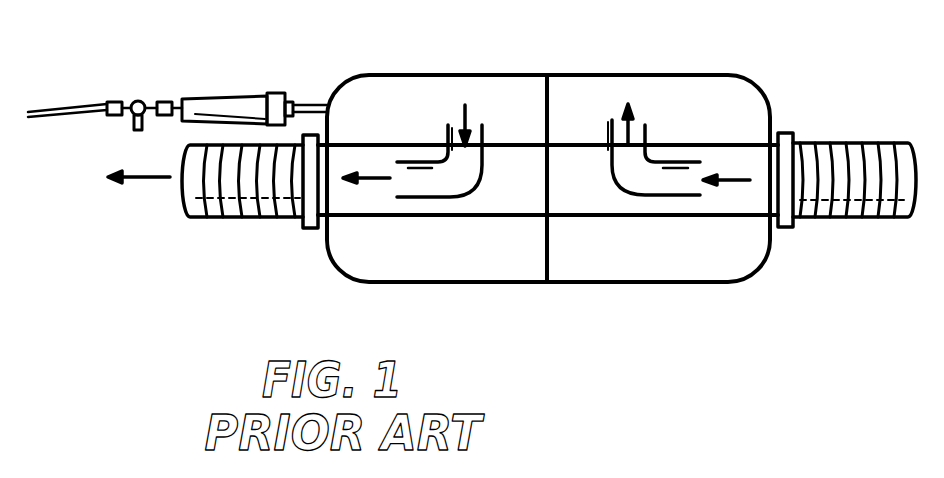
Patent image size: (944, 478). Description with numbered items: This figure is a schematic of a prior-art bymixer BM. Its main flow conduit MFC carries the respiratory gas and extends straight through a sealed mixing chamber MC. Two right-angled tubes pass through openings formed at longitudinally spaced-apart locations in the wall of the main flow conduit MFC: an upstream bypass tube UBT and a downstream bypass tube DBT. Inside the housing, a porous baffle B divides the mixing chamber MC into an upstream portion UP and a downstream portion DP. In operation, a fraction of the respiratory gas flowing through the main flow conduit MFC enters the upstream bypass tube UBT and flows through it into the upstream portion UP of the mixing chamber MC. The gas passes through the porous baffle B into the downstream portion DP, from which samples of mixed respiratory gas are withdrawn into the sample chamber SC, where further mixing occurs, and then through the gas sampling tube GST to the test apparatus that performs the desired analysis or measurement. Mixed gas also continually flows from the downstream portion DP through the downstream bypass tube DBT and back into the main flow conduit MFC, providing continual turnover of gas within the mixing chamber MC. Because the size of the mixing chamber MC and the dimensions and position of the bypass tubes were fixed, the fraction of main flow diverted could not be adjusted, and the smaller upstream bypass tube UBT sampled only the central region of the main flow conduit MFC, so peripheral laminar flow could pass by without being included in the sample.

The gas sampling tube GST is at (71, 104).
The sample chamber SC is at (238, 103).
The downstream portion DP is at (387, 103).
The porous baffle B is at (563, 82).
The upstream portion UP is at (650, 110).
The body of muffler BM is at (773, 94).
The downstream bypass tube DBT is at (420, 197).
The upstream bypass tube UBT is at (640, 200).
The mixing chamber MC is at (667, 253).
The main flow conduit MFC is at (737, 205).